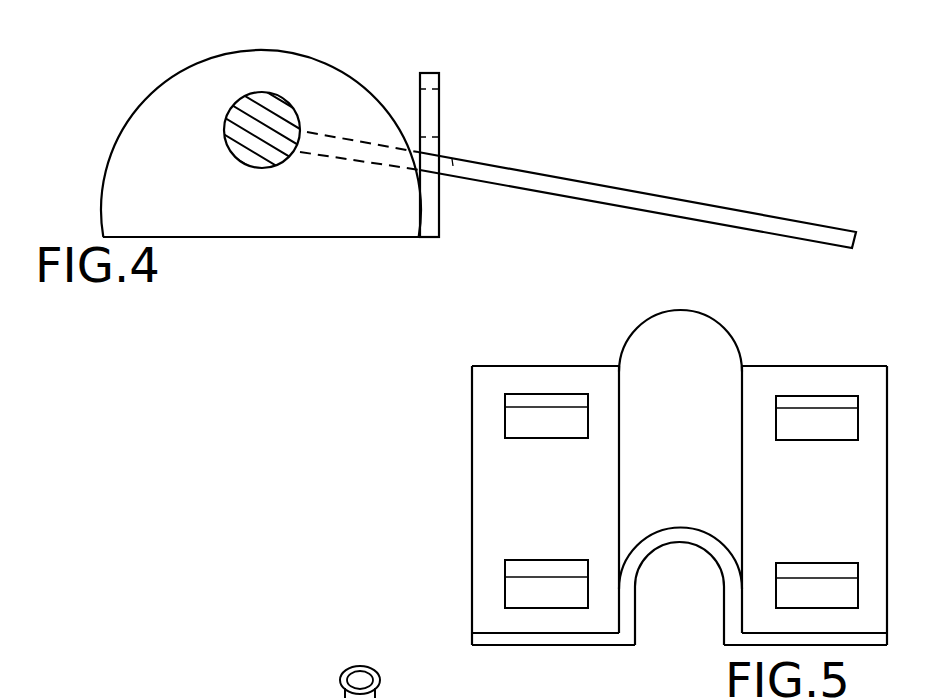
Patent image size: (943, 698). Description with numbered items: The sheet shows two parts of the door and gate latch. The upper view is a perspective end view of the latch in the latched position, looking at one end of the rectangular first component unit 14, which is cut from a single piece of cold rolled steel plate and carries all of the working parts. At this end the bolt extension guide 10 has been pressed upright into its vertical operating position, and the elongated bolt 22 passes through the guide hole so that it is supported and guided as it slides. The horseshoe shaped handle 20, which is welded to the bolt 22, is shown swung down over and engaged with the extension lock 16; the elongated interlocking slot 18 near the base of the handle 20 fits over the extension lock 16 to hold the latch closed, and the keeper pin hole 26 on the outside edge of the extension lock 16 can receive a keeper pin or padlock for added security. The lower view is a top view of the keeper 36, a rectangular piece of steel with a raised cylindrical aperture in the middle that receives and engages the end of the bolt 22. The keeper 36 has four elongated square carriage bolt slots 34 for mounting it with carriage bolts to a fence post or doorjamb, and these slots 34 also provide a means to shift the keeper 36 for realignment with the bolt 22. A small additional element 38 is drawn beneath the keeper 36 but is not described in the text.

In FIG. 4, the bolt extension guide 10 is at (380, 65).
In FIG. 4, the first component unit 14 is at (348, 237).
In FIG. 4, the extension lock 16 is at (431, 237).
In FIG. 4, the elongated interlocking slot 18 is at (445, 153).
In FIG. 4, the horseshoe shaped handle 20 is at (517, 188).
In FIG. 4, the bolt 22 is at (263, 168).
In FIG. 4, the keeper pin hole 26 is at (440, 98).
In FIG. 5, the carriage bolt slot 34 is at (505, 416).
In FIG. 5, the keeper 36 is at (472, 537).
In FIG. 5, the grommet 38 is at (380, 690).